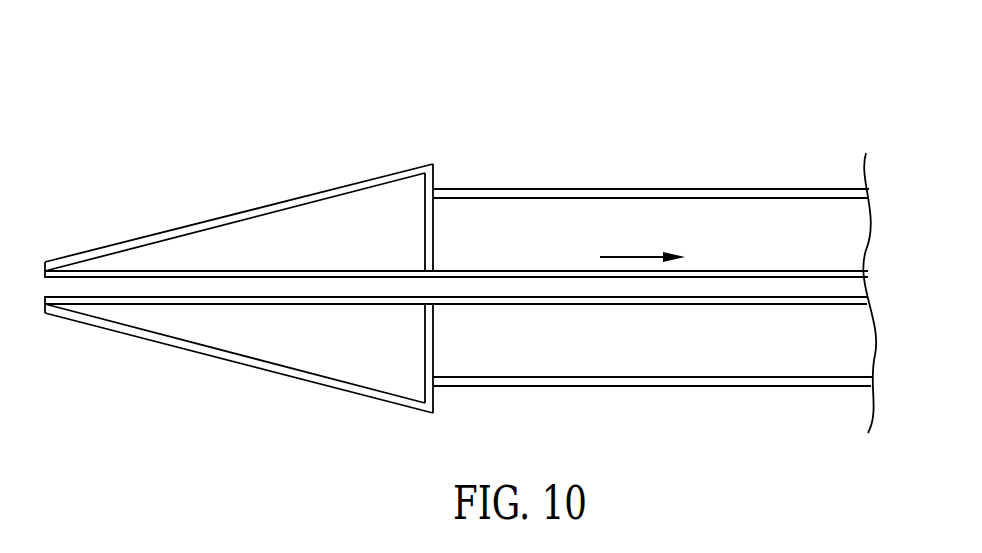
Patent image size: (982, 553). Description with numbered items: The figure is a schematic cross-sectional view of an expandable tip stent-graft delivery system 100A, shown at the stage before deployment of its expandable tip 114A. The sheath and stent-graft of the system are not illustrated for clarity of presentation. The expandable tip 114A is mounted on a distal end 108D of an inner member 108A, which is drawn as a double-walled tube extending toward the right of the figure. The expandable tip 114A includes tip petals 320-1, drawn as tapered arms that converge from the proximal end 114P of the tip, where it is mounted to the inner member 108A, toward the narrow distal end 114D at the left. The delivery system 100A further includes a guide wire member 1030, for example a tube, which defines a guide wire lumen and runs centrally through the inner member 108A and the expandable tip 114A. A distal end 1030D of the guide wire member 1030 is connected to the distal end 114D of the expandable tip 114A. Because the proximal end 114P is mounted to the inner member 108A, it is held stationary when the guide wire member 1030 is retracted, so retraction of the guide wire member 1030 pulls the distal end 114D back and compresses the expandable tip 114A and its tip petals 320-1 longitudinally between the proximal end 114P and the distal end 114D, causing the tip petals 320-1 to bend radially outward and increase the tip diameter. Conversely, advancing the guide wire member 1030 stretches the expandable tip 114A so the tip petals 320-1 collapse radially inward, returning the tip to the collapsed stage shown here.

The expandable tip stent-graft delivery system 100A is at (803, 121).
The inner member 108A is at (628, 190).
The distal end of inner member 108D is at (458, 190).
The guide wire member 1030 is at (802, 272).
The distal end of guide wire member 1030D is at (84, 270).
The expandable tip 114A is at (246, 160).
The proximal end of expandable tip 114P is at (420, 166).
The distal end of expandable tip 114D is at (67, 313).
The tip petals 320-1 is at (363, 178).